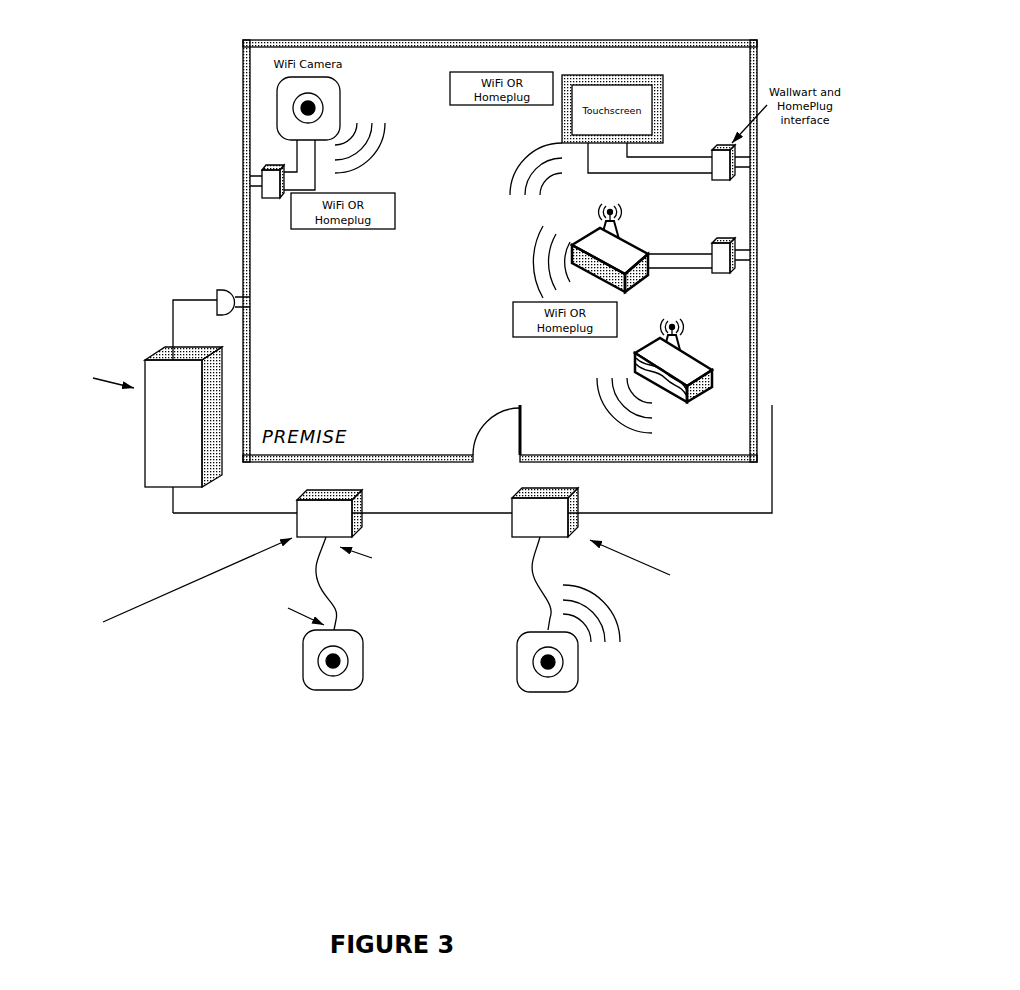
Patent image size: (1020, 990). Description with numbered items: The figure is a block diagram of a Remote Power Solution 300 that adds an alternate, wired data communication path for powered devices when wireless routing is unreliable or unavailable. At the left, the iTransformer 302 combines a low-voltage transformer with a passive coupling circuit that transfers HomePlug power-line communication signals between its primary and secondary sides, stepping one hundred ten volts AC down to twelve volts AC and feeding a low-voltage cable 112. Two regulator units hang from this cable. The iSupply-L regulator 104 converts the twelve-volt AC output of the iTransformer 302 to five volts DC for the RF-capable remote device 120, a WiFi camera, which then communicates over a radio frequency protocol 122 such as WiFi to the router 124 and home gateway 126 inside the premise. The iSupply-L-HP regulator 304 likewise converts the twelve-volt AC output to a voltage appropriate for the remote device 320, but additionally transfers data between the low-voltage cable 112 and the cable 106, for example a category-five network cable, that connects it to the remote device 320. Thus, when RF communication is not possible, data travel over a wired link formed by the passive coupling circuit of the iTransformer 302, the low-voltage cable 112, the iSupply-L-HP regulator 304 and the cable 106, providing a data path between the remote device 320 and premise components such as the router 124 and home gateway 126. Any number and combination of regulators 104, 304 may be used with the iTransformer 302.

The Remote Power Solution 300 is at (106, 101).
The iTransformer 302 is at (135, 401).
The iSupply-L-HP regulator 304 is at (188, 604).
The iSupply-L regulator 104 is at (638, 572).
The cable 106 is at (344, 607).
The low-voltage cable 112 is at (243, 507).
The remote device 120 is at (548, 697).
The radio frequency protocol 122 is at (607, 641).
The router 124 is at (690, 322).
The home gateway 126 is at (645, 214).
The remote device 320 is at (302, 678).